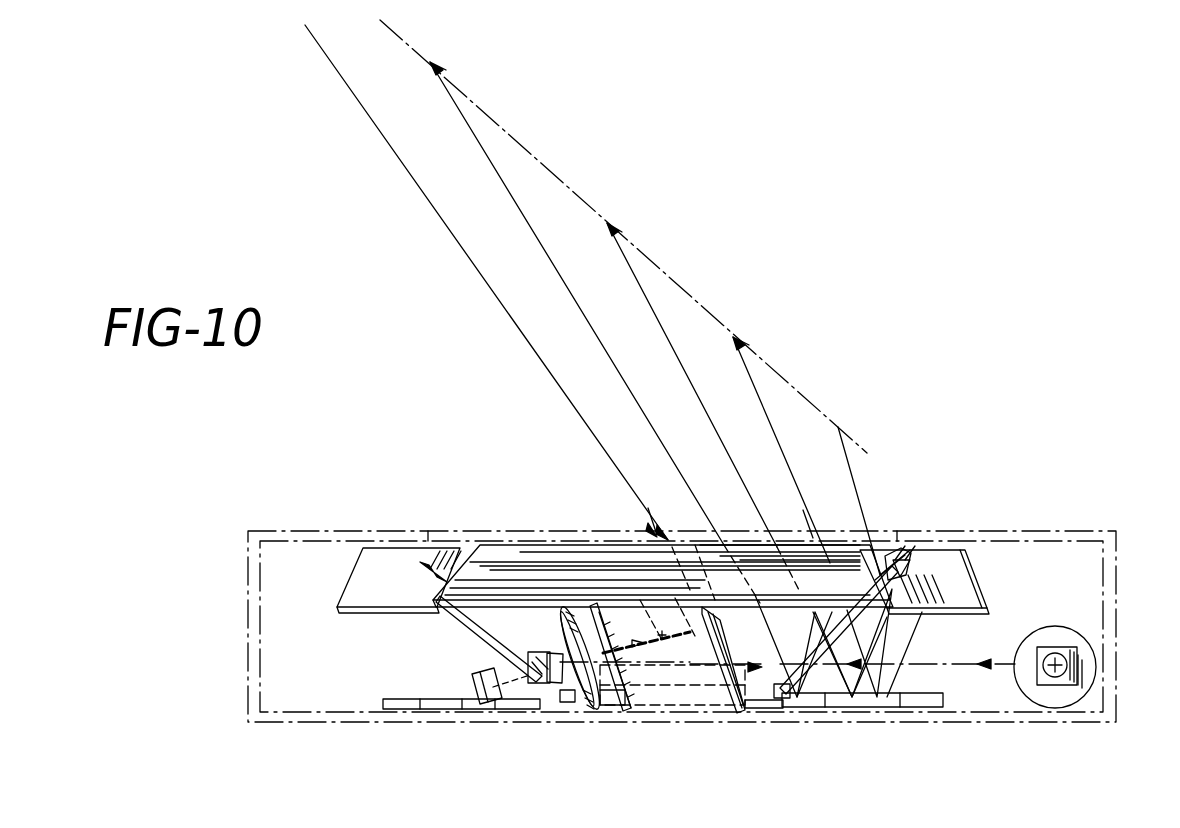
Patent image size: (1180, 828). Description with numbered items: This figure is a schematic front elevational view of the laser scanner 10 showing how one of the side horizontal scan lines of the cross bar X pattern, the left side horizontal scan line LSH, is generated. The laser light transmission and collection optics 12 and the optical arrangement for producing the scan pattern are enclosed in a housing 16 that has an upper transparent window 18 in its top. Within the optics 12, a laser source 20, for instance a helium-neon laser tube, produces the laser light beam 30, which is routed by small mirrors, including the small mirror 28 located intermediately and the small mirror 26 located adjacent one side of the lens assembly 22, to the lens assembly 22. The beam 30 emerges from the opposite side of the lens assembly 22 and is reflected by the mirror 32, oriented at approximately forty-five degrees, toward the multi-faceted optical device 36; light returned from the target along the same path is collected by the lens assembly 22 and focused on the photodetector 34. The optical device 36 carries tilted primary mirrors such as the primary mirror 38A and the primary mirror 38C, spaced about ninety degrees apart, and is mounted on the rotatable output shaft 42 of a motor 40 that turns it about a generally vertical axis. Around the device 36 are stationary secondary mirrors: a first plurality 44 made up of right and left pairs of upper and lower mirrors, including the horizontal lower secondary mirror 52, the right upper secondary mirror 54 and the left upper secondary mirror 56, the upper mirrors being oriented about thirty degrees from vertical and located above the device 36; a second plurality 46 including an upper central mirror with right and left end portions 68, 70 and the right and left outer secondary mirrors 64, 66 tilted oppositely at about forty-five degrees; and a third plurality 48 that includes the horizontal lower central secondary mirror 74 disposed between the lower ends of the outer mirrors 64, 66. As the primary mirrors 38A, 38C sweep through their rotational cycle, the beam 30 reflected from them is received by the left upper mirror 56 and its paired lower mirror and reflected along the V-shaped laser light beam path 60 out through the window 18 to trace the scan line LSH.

The laser scanner 10 is at (195, 678).
The laser light transmission and collection optics 12 is at (512, 732).
The housing 16 is at (1118, 552).
The upper transparent window 18 is at (893, 545).
The laser source 20 is at (1097, 640).
The lens assembly 22 is at (597, 708).
The small mirror 26 is at (580, 717).
The small mirror 28 is at (547, 652).
The laser light beam 30 is at (940, 658).
The mirror 32 is at (630, 705).
The photodetector 34 is at (470, 687).
The multi-faceted optical device 36 is at (655, 623).
The primary mirror 38A is at (680, 620).
The primary mirror 38C is at (623, 620).
The motor 40 is at (715, 697).
The rotatable output shaft 42 is at (675, 680).
The first plurality of secondary mirrors 44 is at (987, 572).
The second plurality of secondary mirrors 46 is at (648, 508).
The third plurality of secondary mirrors 48 is at (765, 703).
The lower secondary mirror 52 is at (390, 557).
The upper secondary mirror 54 is at (403, 703).
The upper secondary mirror 56 is at (967, 550).
The V-shaped laser light beam path 60 is at (533, 343).
The right outer secondary mirror 64 is at (483, 633).
The left outer secondary mirror 66 is at (850, 620).
The right end portion 68 is at (525, 553).
The left end portion 70 is at (810, 531).
The lower central secondary mirror 74 is at (848, 657).
The left side horizontal scan line LSH is at (787, 383).